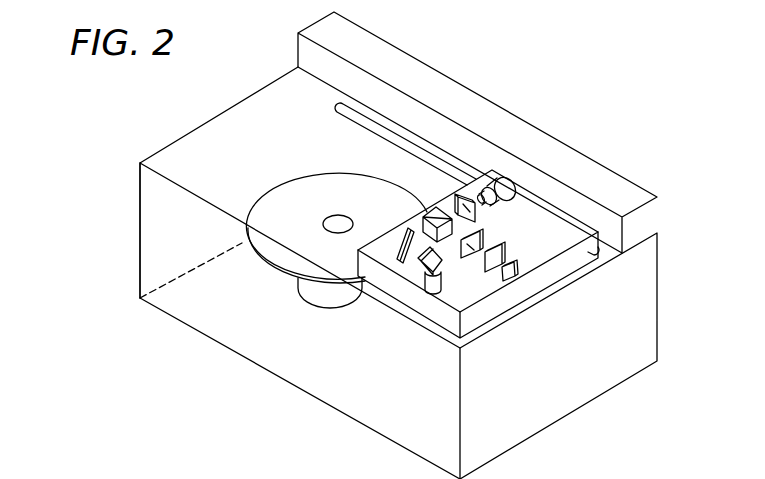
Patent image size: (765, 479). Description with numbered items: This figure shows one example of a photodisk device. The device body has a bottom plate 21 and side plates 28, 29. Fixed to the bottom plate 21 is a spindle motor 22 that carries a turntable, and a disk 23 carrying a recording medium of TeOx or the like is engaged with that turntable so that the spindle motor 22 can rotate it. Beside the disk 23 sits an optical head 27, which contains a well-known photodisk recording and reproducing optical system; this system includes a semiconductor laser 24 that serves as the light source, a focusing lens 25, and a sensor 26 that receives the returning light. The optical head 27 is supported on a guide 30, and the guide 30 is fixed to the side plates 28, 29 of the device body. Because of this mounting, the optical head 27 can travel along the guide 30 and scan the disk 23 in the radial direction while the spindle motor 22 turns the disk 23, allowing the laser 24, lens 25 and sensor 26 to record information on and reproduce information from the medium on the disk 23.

The bottom plate 21 is at (183, 308).
The spindle motor 22 is at (330, 300).
The disk 23 is at (272, 242).
The semiconductor laser 24 is at (490, 200).
The focusing lens 25 is at (428, 284).
The sensor 26 is at (513, 278).
The optical head 27 is at (567, 267).
The side plate 28 is at (557, 410).
The side plate 29 is at (142, 220).
The guide 30 is at (348, 115).